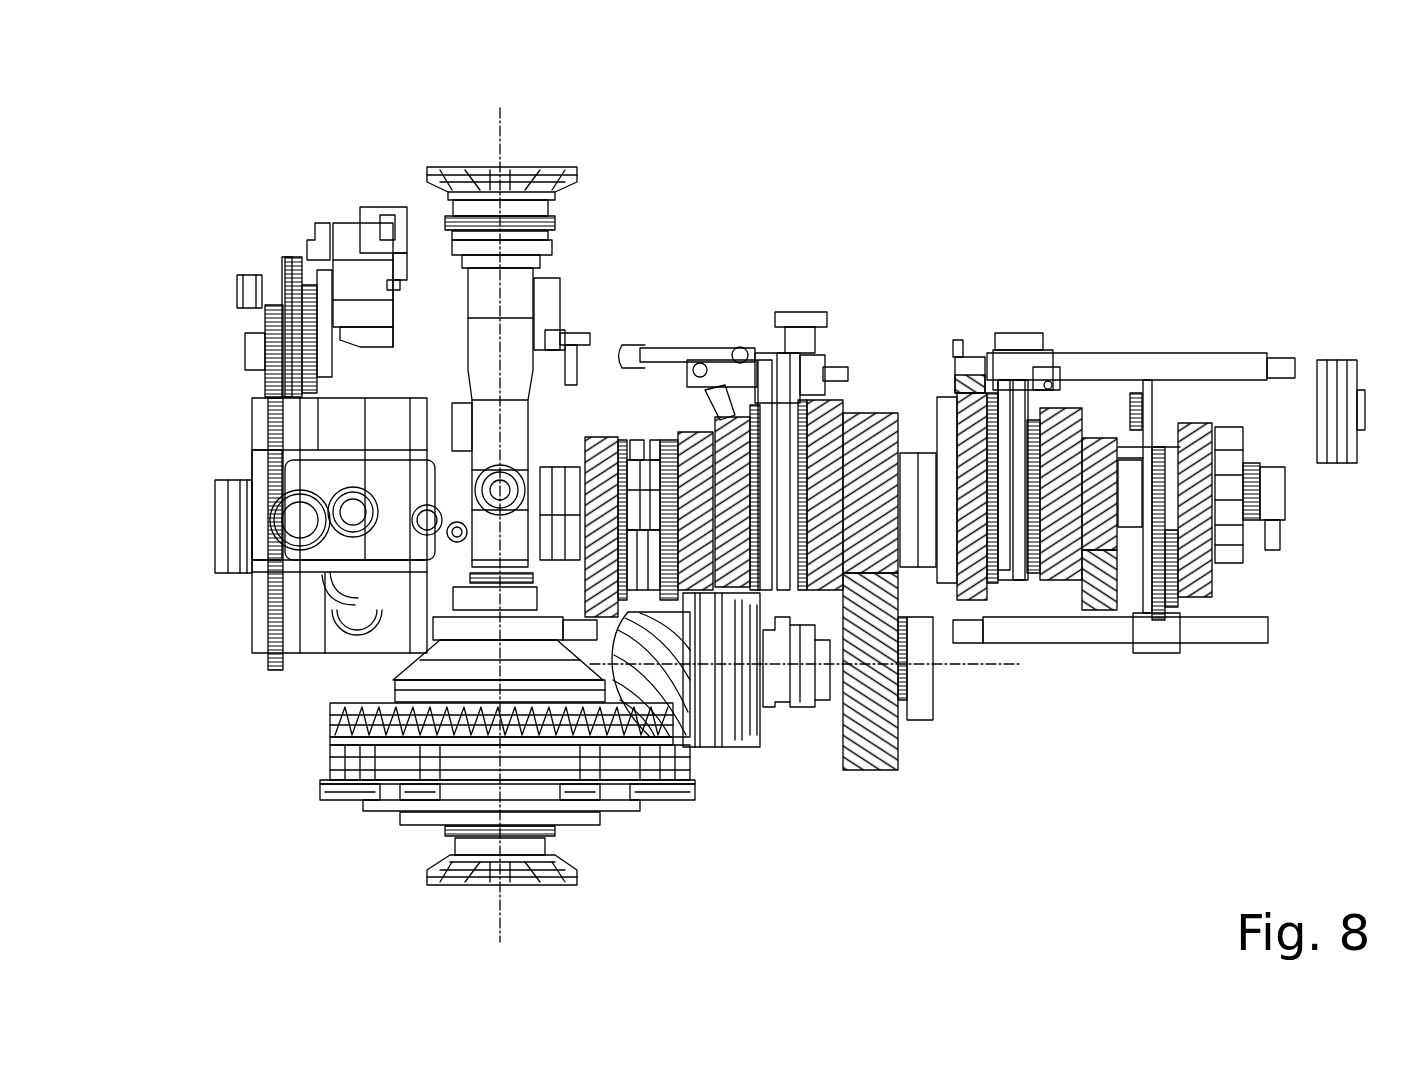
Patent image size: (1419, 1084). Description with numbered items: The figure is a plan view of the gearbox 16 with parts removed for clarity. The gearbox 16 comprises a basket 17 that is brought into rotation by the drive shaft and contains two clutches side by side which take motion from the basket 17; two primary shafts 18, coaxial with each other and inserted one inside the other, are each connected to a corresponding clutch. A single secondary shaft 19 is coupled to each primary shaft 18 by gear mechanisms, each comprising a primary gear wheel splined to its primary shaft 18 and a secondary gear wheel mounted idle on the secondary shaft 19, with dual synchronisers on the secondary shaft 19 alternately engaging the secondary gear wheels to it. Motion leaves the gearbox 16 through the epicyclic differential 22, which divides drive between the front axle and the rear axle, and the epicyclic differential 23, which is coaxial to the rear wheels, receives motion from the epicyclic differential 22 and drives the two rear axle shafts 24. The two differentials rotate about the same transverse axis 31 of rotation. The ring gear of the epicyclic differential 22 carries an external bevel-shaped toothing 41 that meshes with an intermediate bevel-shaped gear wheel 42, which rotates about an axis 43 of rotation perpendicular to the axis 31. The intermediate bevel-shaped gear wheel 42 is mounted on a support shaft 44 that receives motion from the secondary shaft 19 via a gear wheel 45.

The gearbox 16 is at (1332, 128).
The basket 17 is at (236, 390).
The primary shafts 18 is at (562, 540).
The secondary shaft 19 is at (660, 482).
The epicyclic differential 22 is at (286, 704).
The epicyclic differential 23 is at (641, 846).
The rear axle shafts 24 is at (477, 182).
The axis of rotation 31 is at (503, 924).
The external bevel-shaped toothing 41 is at (346, 722).
The intermediate bevel-shaped gear wheel 42 is at (681, 700).
The axis of rotation 43 is at (994, 676).
The support shaft 44 is at (801, 678).
The gear wheel 45 is at (872, 700).